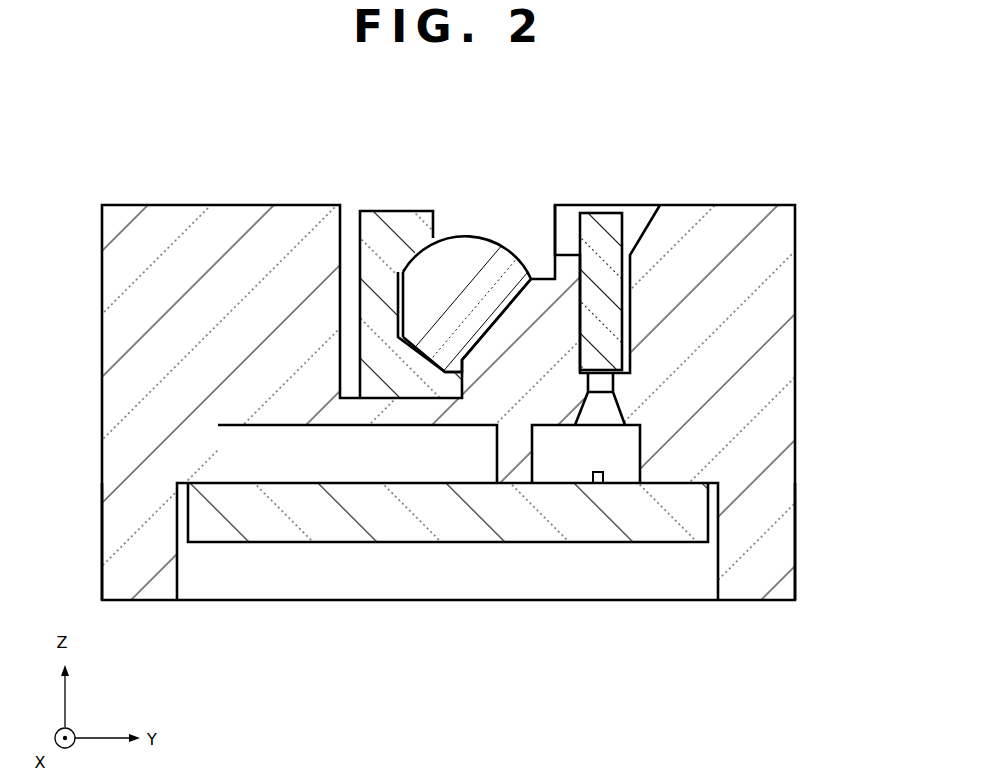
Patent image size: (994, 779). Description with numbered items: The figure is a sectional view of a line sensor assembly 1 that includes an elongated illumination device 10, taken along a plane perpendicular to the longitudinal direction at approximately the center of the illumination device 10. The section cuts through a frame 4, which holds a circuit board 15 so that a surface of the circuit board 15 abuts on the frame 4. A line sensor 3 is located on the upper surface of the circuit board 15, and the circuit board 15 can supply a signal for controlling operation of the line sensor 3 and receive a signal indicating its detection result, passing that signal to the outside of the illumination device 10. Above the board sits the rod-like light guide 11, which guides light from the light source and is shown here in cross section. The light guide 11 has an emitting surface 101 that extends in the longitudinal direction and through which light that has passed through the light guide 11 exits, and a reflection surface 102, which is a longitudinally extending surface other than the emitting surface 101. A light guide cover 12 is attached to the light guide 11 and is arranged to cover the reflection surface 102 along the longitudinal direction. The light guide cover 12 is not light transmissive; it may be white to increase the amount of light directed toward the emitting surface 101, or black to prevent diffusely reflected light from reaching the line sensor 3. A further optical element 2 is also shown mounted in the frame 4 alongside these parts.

The optical module 1 is at (128, 168).
The illumination device 10 is at (477, 235).
The emitting surface 101 is at (500, 244).
The reflection surface 102 is at (404, 286).
The light guide 11 is at (417, 307).
The light guide cover 12 is at (398, 211).
The optical element 2 is at (605, 300).
The line sensor 3 is at (597, 472).
The frame 4 is at (102, 540).
The circuit board 15 is at (370, 542).